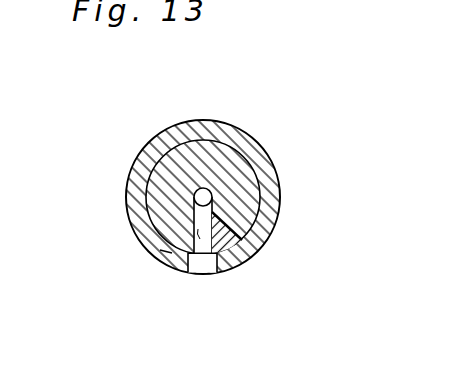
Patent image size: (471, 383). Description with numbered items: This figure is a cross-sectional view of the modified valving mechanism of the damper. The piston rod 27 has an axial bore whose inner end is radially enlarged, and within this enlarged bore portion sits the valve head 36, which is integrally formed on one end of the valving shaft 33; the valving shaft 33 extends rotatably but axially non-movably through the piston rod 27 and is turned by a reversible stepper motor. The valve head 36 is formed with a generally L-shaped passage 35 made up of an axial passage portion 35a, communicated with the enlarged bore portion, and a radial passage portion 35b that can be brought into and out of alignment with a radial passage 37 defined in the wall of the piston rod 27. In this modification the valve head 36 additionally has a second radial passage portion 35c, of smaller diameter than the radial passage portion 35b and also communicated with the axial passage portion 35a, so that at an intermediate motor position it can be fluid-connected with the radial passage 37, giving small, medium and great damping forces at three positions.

The piston rod 27 is at (127, 186).
The valving shaft 33 is at (172, 165).
The L-shaped passage 35 is at (203, 215).
The axial passage portion 35a is at (204, 188).
The radial passage portion 35b is at (165, 252).
The second radial passage portion 35c is at (236, 225).
The valve head 36 is at (235, 170).
The radial passage 37 is at (196, 268).